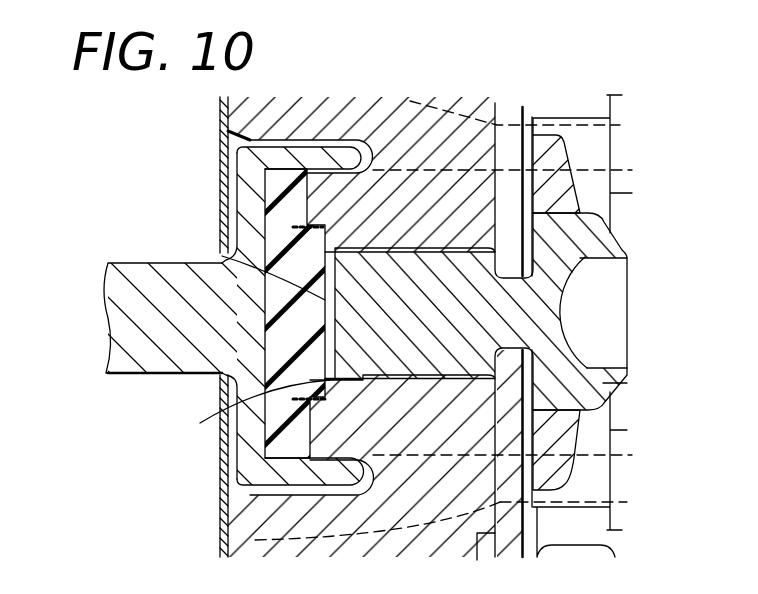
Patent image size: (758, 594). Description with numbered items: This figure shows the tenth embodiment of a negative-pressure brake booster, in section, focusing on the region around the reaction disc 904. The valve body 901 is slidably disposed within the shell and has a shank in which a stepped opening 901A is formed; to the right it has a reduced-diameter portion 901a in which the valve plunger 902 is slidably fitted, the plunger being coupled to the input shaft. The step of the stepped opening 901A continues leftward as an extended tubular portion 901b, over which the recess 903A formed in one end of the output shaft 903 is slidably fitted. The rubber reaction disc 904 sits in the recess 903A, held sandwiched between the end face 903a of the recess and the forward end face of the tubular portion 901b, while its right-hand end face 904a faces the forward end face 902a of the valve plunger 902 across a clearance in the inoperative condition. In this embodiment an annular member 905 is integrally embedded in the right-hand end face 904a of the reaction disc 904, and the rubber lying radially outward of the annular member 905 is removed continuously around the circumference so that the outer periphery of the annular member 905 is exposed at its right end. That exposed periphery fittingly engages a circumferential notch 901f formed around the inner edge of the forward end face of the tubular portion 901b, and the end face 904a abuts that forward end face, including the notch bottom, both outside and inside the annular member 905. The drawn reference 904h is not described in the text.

The valve body 901 is at (427, 550).
The stepped opening 901A is at (243, 470).
The reduced-diameter portion 901a is at (443, 377).
The tubular portion 901b is at (328, 500).
The circumferential notch 901f is at (300, 387).
The valve plunger 902 is at (536, 290).
The forward end face 902a is at (222, 256).
The output shaft 903 is at (100, 299).
The recess 903A is at (266, 184).
The end face of the recess 903a is at (265, 305).
The reaction disc 904 is at (296, 168).
The right-hand end face 904a is at (350, 248).
The retainer corner 904h is at (227, 377).
The annular member 905 is at (368, 152).